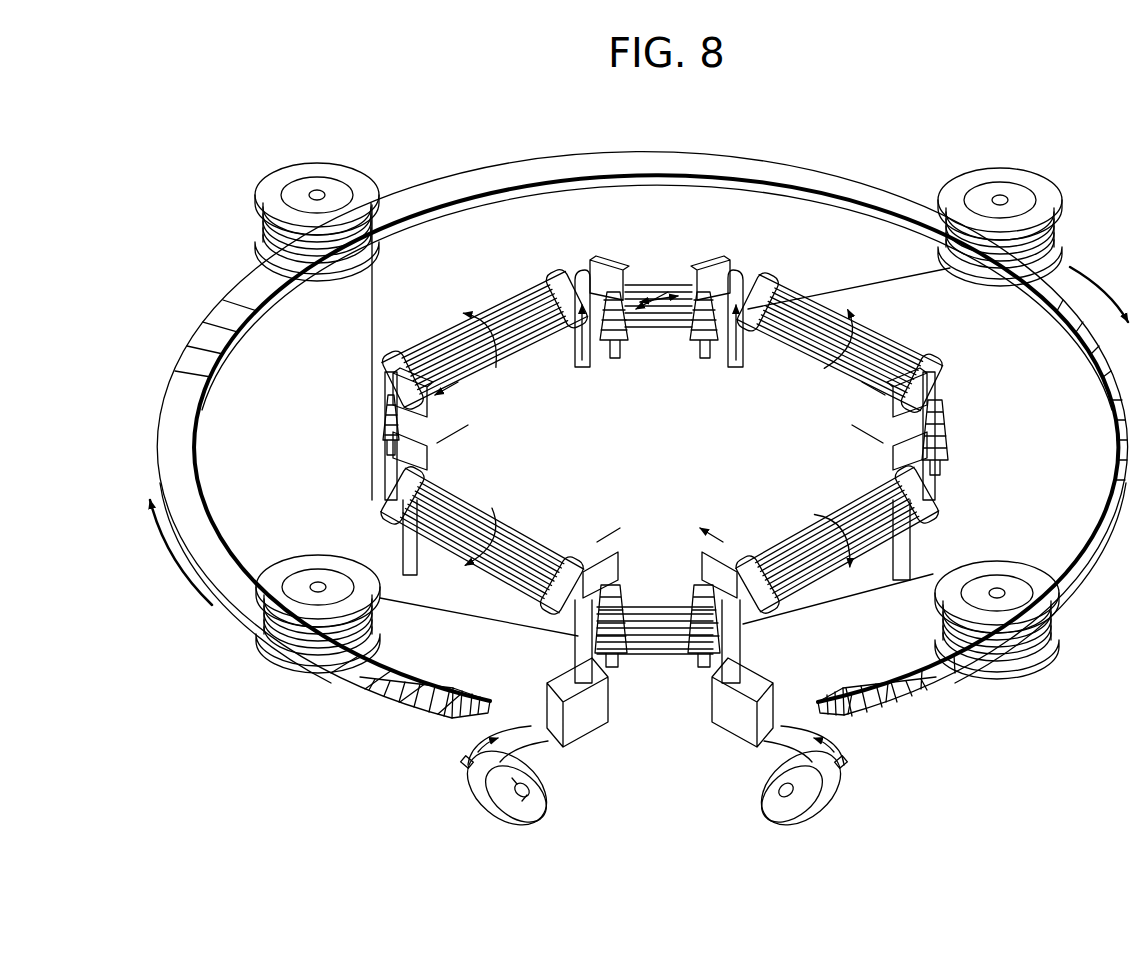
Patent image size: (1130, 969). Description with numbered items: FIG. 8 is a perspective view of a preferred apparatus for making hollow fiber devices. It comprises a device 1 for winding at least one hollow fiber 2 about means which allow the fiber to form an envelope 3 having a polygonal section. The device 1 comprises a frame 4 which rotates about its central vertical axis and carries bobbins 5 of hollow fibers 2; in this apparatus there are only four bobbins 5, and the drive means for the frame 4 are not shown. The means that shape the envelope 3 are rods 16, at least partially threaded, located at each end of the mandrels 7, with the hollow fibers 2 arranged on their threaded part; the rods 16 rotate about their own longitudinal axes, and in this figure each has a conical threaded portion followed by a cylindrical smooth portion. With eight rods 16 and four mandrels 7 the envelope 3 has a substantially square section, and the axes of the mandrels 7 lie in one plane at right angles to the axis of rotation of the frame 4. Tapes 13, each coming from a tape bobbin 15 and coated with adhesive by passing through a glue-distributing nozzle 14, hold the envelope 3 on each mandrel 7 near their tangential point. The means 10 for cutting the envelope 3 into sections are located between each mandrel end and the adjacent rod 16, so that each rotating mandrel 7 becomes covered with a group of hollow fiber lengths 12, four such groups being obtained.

The device for winding 1 is at (518, 160).
The hollow fiber 2 is at (370, 325).
The envelope 3 is at (645, 290).
The frame 4 is at (583, 162).
The bobbin 5 is at (302, 167).
The mandrel 7 is at (378, 400).
The means for cutting the envelope into sections 10 is at (420, 452).
The hollow fiber length 12 is at (865, 348).
The tape 13 is at (583, 372).
The glue-distributing nozzle 14 is at (548, 682).
The tape bobbin 15 is at (470, 790).
The rod 16 is at (690, 362).